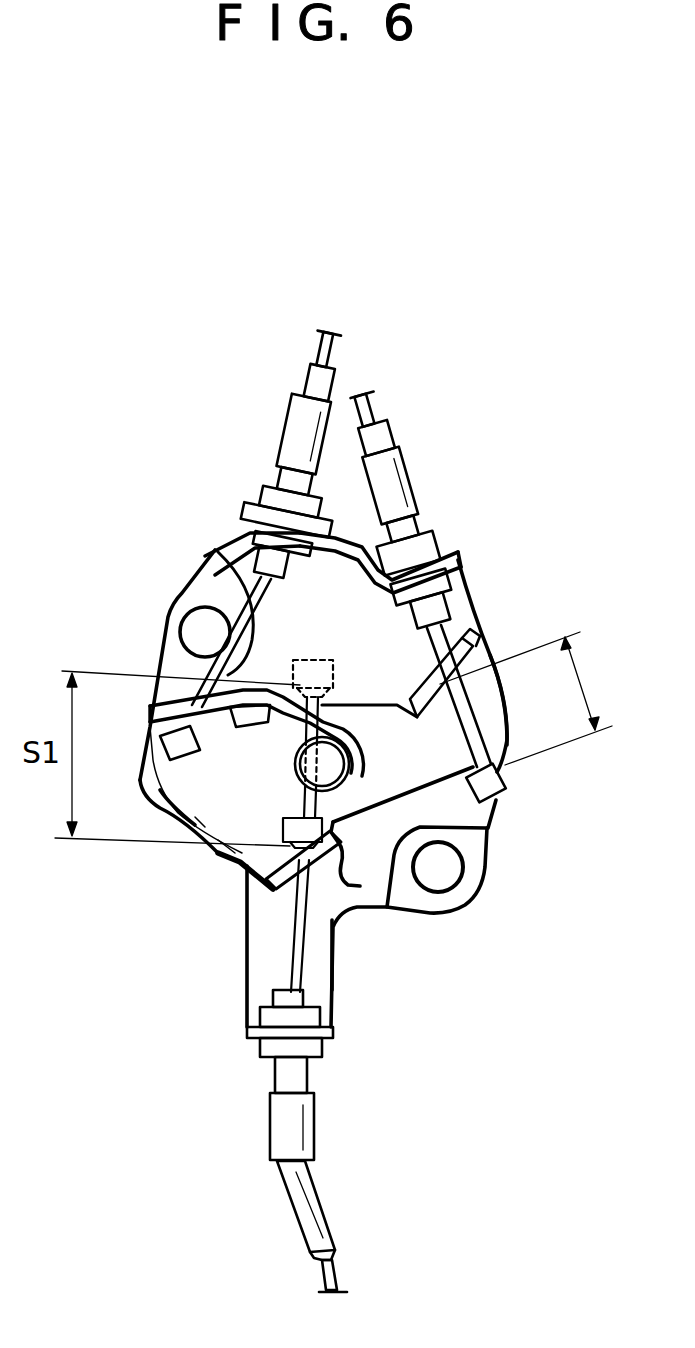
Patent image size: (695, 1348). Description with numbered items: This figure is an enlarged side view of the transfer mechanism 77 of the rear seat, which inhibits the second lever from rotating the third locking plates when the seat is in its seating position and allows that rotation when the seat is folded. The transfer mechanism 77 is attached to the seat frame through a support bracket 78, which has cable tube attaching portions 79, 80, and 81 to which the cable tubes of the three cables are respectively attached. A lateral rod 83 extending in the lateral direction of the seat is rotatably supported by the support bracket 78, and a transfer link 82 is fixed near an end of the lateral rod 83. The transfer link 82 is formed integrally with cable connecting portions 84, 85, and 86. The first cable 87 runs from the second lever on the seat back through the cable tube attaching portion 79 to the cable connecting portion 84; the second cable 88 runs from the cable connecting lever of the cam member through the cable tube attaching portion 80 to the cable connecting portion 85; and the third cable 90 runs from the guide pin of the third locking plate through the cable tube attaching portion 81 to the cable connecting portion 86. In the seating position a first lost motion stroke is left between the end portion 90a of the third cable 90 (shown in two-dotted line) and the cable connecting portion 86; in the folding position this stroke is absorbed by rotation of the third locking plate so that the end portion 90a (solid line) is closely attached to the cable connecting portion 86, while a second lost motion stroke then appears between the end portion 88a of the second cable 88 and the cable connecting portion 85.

The transfer mechanism 77 is at (530, 632).
The support bracket 78 is at (483, 883).
The cable tube attaching portion 79 is at (245, 520).
The cable tube attaching portion 80 is at (442, 562).
The cable tube attaching portion 81 is at (327, 1032).
The transfer link 82 is at (210, 828).
The lateral rod 83 is at (342, 768).
The cable connecting portion 84 is at (181, 708).
The cable connecting portion 85 is at (458, 630).
The cable connecting portion 86 is at (338, 878).
The first cable 87 is at (232, 552).
The second cable 88 is at (477, 723).
The end portion of the second cable 88a is at (507, 780).
The third cable 90 is at (290, 950).
The end portion of the third cable 90a is at (287, 838).